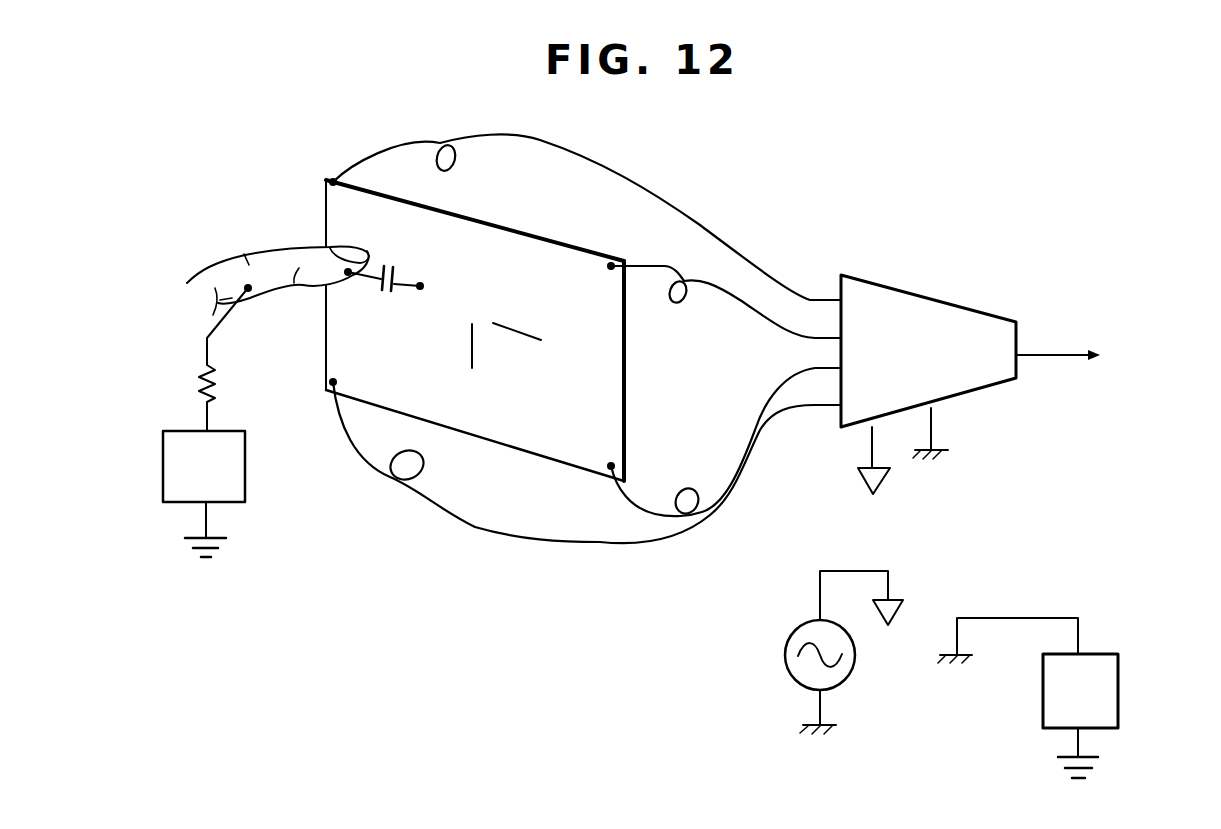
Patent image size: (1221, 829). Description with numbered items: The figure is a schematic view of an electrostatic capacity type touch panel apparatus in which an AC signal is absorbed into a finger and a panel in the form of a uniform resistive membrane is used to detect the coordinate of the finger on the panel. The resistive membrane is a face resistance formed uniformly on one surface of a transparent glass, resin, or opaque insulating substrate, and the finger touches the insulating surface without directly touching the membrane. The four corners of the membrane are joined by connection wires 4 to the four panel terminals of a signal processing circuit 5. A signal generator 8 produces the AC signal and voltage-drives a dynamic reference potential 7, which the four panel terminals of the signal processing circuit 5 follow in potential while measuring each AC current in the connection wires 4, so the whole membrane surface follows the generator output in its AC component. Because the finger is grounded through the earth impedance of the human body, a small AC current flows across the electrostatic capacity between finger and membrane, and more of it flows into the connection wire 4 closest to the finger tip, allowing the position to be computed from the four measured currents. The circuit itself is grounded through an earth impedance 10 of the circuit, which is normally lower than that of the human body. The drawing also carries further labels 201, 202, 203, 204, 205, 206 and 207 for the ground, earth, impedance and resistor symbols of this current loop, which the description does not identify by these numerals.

The connection wires 4 is at (660, 194).
The signal processing circuit 5 is at (560, 237).
The dynamic reference potential 7 is at (238, 237).
The signal generator 8 is at (387, 267).
The earth impedance of the circuit 10 is at (945, 300).
The ground 201 is at (940, 462).
The ground terminal 202 is at (880, 488).
The AC signal source 203 is at (786, 665).
The ground 204 is at (1062, 770).
The impedance Z2 205 is at (1042, 711).
The impedance Z1 206 is at (163, 471).
The resistor 207 is at (198, 384).